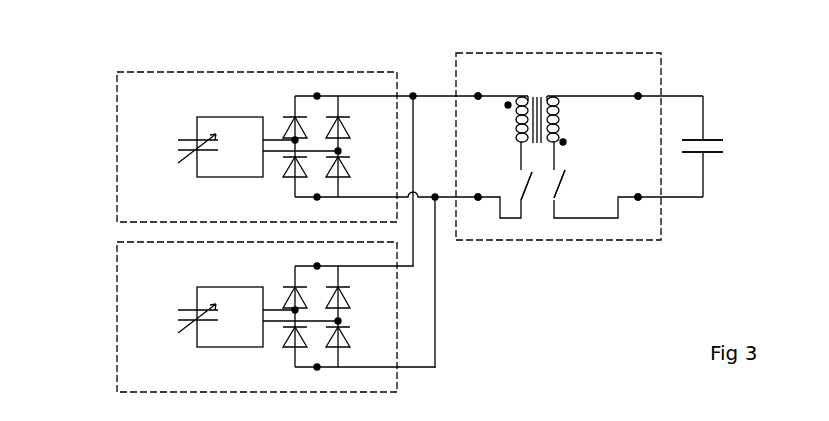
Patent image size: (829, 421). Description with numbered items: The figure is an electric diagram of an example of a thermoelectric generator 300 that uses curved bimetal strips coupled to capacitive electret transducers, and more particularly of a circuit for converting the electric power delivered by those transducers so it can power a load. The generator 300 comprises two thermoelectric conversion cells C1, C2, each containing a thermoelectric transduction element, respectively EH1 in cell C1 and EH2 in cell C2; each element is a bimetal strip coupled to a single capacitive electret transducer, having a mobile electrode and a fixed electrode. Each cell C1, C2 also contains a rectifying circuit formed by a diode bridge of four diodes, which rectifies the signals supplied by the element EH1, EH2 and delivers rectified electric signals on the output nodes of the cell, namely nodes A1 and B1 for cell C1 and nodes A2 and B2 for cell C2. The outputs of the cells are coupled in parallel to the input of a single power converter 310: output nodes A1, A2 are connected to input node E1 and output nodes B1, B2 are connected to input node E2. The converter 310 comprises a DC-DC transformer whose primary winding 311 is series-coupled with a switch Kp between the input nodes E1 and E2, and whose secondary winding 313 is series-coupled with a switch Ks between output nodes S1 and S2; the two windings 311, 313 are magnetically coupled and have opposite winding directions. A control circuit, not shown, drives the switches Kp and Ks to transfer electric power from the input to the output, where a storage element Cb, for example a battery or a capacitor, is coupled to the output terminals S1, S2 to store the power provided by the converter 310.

The thermoelectric generator 300 is at (428, 54).
The power converter 310 is at (615, 53).
The first winding 311 is at (515, 131).
The second winding 313 is at (560, 123).
The thermoelectric conversion cell C1 is at (117, 135).
The thermoelectric conversion cell C2 is at (243, 318).
The thermoelectric transduction element EH1 is at (198, 147).
The thermoelectric transduction element EH2 is at (198, 317).
The node A1 is at (320, 86).
The node B1 is at (318, 209).
The node A2 is at (320, 256).
The node B2 is at (318, 379).
The input node E1 is at (479, 86).
The input node E2 is at (478, 210).
The output node S1 is at (640, 86).
The output node S2 is at (639, 210).
The switch Kp is at (511, 186).
The switch Ks is at (575, 185).
The storage element Cb is at (720, 153).